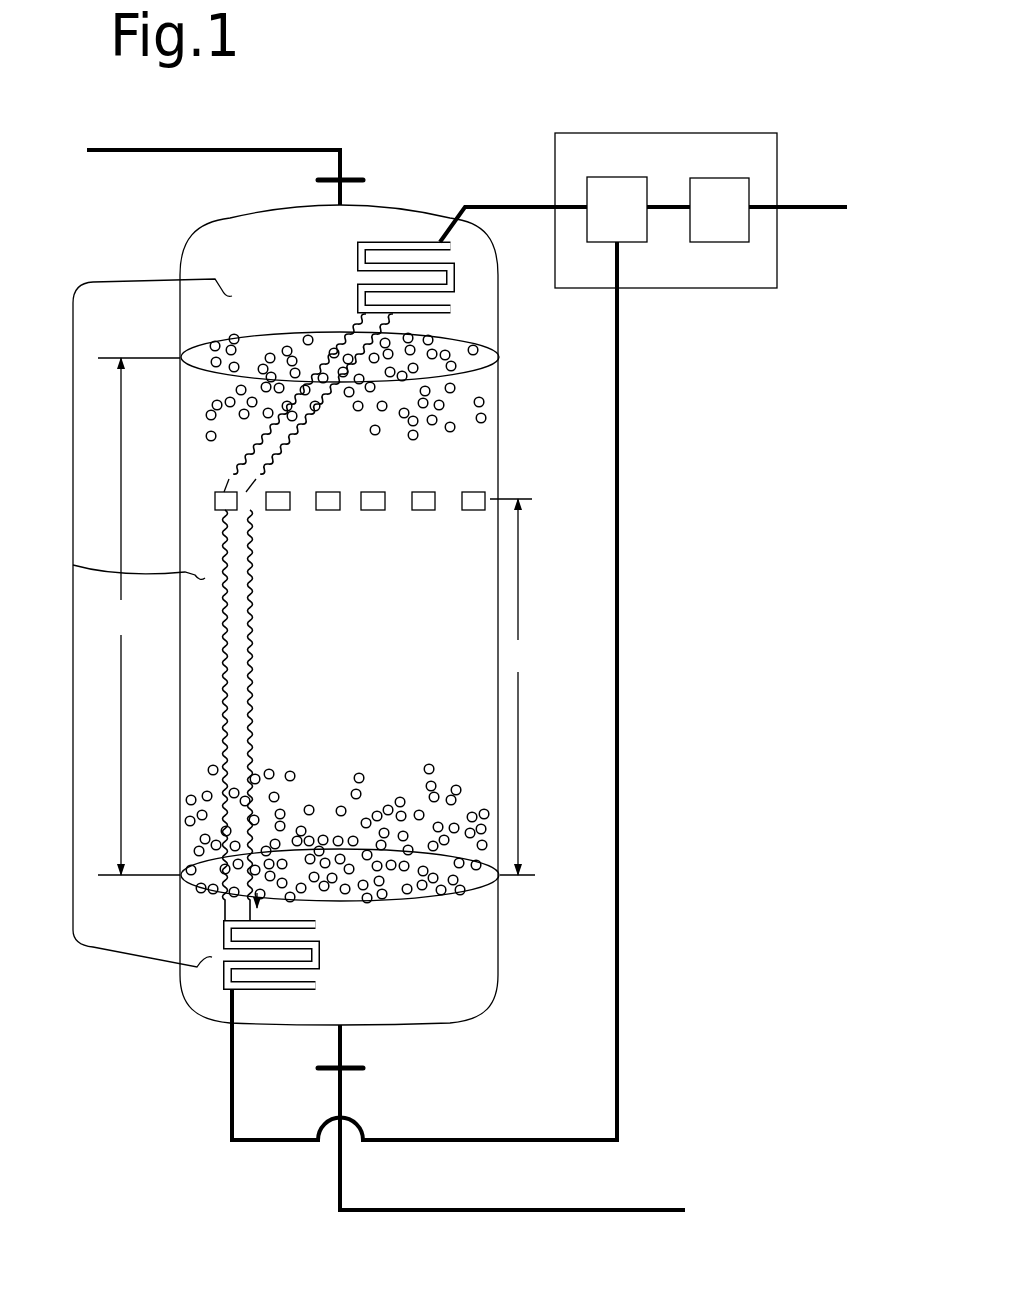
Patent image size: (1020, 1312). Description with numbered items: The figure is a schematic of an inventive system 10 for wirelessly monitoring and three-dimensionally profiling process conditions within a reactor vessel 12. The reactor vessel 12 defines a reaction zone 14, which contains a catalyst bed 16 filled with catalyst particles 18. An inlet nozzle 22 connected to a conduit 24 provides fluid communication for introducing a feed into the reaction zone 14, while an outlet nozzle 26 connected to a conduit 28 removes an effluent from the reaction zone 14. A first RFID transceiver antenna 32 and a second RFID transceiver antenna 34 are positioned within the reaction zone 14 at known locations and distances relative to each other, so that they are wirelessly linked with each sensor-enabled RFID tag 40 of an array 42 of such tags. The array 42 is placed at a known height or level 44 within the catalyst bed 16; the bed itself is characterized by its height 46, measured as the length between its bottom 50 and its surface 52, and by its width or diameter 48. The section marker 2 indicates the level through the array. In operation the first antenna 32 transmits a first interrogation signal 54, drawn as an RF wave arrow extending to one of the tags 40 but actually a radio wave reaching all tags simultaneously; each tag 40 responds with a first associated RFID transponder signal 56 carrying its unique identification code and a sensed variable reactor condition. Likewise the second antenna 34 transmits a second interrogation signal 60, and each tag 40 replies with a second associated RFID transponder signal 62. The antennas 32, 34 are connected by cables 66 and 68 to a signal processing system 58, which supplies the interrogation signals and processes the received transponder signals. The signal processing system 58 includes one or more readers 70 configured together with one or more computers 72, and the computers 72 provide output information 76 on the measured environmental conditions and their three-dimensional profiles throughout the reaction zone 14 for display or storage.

The inventive system 10 is at (405, 155).
The reactor vessel 12 is at (178, 268).
The reaction zone 14 is at (62, 575).
The catalyst bed 16 is at (407, 637).
The catalyst particles 18 is at (398, 762).
The inlet nozzle 22 is at (335, 197).
The conduit 24 is at (186, 150).
The outlet nozzle 26 is at (345, 1043).
The conduit 28 is at (485, 1210).
The first RFID transceiver antenna 32 is at (360, 245).
The second RFID transceiver antenna 34 is at (318, 985).
The sensor-enabled RFID tag 40 is at (238, 504).
The array of sensor-enabled RFID tags 42 is at (442, 462).
The height or level 44 is at (513, 687).
The height 46 is at (139, 616).
The width or diameter 48 is at (178, 927).
The bottom 50 is at (370, 905).
The surface 52 is at (303, 340).
The first interrogation signal 54 is at (243, 450).
The first associated RFID transponder signal 56 is at (280, 440).
The signal processing system 58 is at (640, 133).
The second interrogation signal 60 is at (222, 700).
The second associated RFID transponder signal 62 is at (250, 685).
The cable 66 is at (535, 207).
The cable 68 is at (615, 1010).
The reader 70 is at (602, 225).
The computer 72 is at (705, 225).
The output information 76 is at (790, 207).
The section line 2 is at (148, 512).